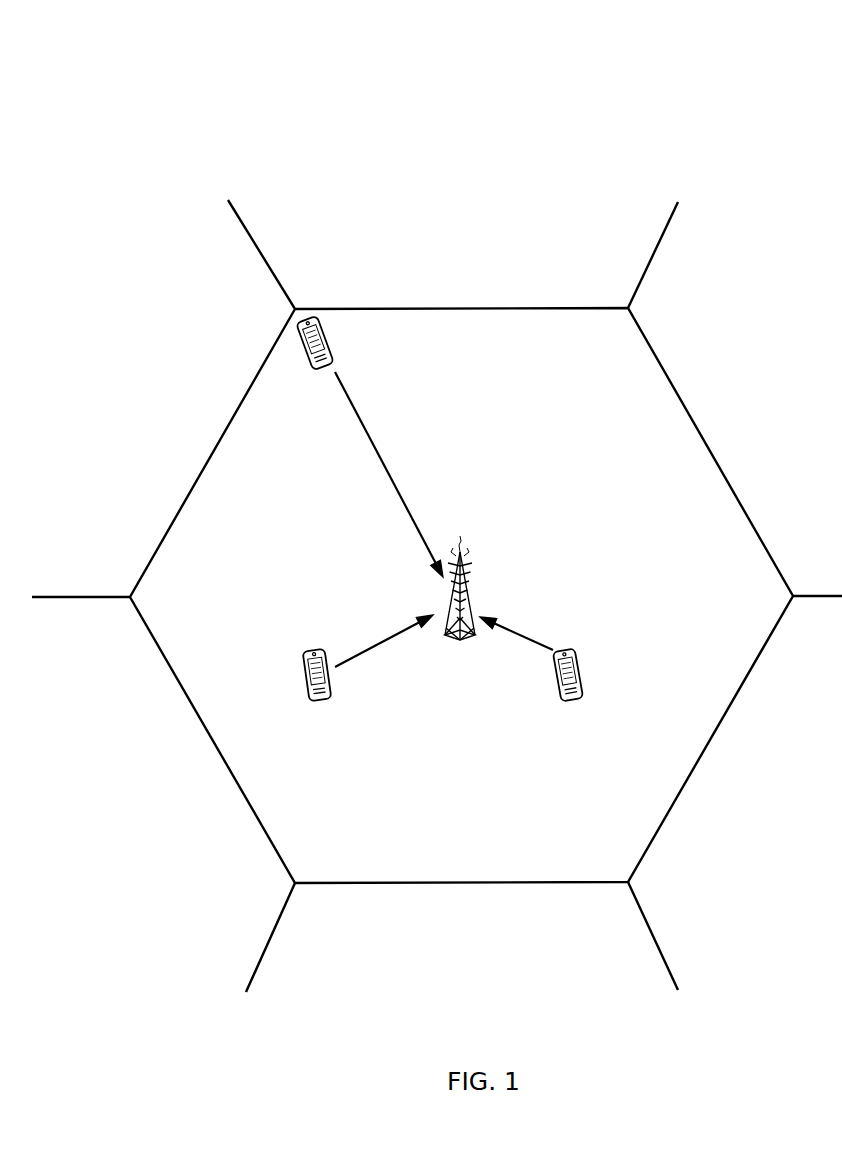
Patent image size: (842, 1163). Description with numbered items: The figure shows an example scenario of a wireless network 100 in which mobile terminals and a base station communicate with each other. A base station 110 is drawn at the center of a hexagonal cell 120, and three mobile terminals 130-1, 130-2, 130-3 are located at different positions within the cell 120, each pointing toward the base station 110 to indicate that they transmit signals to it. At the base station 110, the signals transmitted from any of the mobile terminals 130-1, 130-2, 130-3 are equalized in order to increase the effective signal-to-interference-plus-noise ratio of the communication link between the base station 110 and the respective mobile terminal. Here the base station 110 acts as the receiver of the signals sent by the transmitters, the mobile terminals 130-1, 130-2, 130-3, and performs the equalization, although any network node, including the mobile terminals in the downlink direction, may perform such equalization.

The wireless network 100 is at (656, 116).
The base station 110 is at (465, 604).
The cell 120 is at (437, 596).
The mobile terminal 130-1 is at (574, 659).
The mobile terminal 130-2 is at (363, 673).
The mobile terminal 130-3 is at (356, 446).